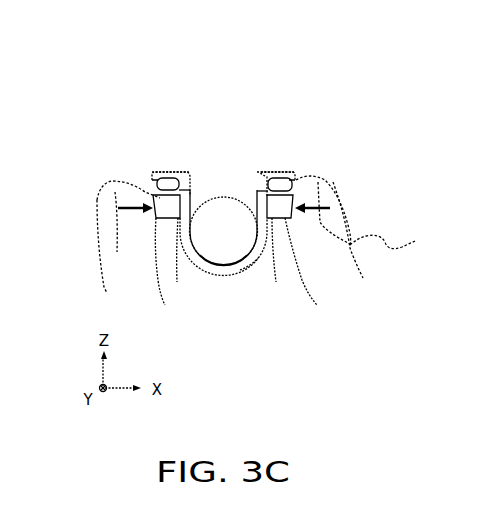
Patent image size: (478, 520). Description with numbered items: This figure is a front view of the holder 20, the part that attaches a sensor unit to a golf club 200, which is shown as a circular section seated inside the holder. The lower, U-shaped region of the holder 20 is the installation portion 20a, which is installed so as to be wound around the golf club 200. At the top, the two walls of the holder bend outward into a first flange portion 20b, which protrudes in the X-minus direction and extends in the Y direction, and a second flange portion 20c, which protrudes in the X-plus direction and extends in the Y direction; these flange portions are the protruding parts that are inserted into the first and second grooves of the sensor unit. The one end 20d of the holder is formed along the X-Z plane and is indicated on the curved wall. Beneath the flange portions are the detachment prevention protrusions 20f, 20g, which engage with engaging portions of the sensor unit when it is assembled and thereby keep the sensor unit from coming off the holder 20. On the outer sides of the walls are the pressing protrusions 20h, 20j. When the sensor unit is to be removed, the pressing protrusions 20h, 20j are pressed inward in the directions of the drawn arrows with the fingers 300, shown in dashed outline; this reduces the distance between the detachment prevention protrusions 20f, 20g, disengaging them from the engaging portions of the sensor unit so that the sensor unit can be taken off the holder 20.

The holder 20 is at (235, 211).
The installation portion 20a is at (218, 276).
The first flange portion 20b is at (152, 173).
The second flange portion 20c is at (300, 180).
The one end 20d is at (250, 280).
The detachment prevention protrusion 20f is at (157, 182).
The detachment prevention protrusion 20g is at (292, 184).
The pressing protrusion 20h is at (177, 251).
The pressing protrusion 20j is at (292, 250).
The golf club 200 is at (197, 195).
The fingers 300 is at (277, 234).